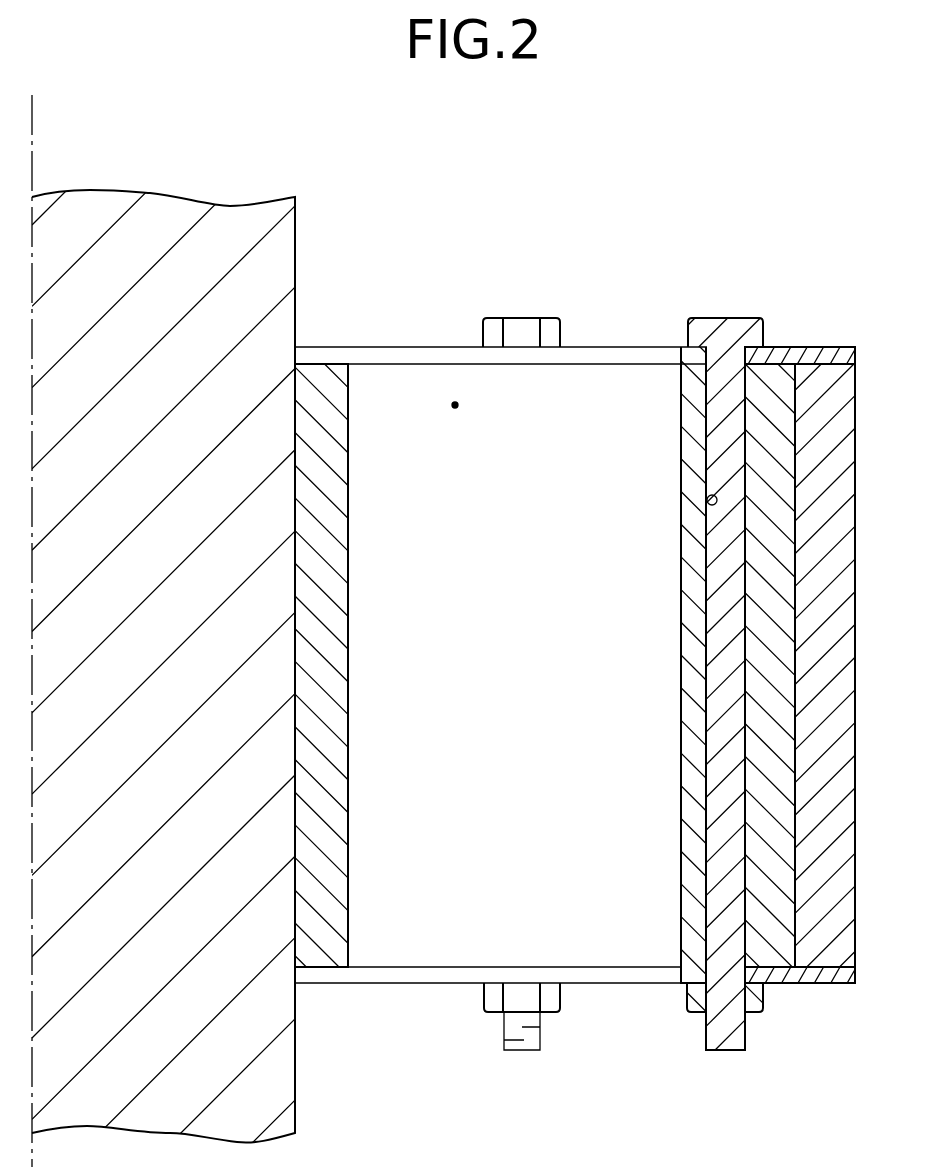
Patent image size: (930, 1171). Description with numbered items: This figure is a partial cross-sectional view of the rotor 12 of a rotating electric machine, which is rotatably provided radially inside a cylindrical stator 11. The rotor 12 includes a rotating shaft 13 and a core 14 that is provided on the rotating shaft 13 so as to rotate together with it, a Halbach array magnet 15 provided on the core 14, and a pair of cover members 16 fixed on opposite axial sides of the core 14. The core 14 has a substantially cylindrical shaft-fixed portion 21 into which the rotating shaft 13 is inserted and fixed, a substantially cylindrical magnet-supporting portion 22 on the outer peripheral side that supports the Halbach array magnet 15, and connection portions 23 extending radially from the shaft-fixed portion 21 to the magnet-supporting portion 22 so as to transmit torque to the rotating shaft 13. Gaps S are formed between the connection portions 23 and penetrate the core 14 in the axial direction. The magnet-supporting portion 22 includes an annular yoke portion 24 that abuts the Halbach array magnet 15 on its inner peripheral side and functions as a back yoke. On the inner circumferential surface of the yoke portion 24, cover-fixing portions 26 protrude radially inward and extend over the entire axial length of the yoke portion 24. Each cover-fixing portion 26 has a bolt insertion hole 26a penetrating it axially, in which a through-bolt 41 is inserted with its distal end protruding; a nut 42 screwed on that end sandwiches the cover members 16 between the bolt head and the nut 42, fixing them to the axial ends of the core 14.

The stator 11 is at (721, 220).
The rotor 12 is at (610, 347).
The rotating shaft 13 is at (163, 210).
The core 14 is at (384, 363).
The Halbach array magnet 15 is at (855, 452).
The cover member 16 is at (798, 356).
The shaft-fixed portion 21 is at (345, 592).
The magnet-supporting portion 22 is at (800, 756).
The connection portion 23 is at (392, 943).
The yoke portion 24 is at (790, 580).
The cover-fixing portion 26 is at (690, 581).
The bolt insertion hole 26a is at (707, 503).
The through-bolt 41 is at (522, 318).
The nut 42 is at (485, 995).
The gap S is at (455, 402).